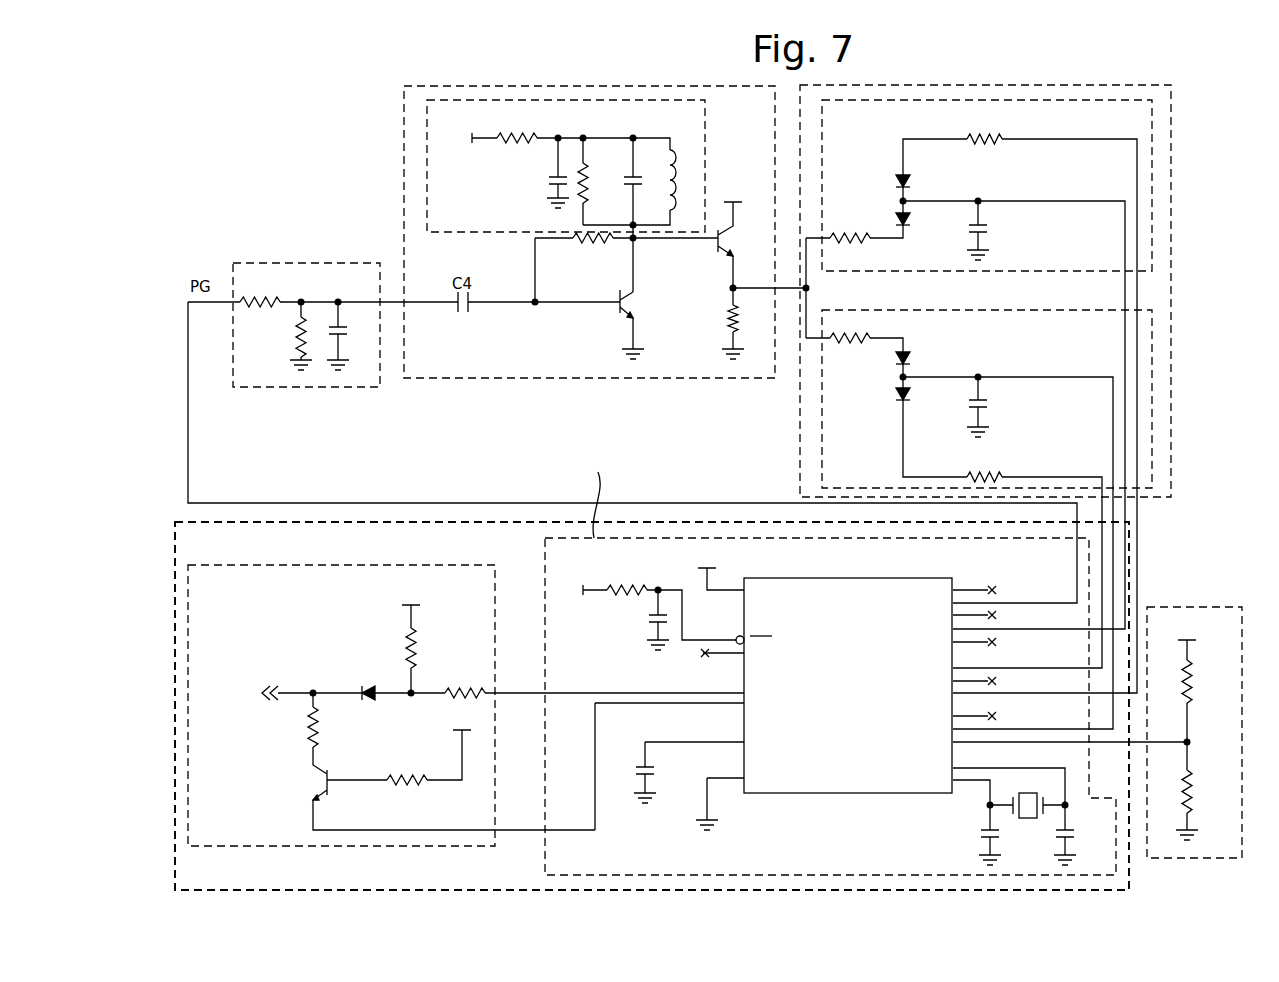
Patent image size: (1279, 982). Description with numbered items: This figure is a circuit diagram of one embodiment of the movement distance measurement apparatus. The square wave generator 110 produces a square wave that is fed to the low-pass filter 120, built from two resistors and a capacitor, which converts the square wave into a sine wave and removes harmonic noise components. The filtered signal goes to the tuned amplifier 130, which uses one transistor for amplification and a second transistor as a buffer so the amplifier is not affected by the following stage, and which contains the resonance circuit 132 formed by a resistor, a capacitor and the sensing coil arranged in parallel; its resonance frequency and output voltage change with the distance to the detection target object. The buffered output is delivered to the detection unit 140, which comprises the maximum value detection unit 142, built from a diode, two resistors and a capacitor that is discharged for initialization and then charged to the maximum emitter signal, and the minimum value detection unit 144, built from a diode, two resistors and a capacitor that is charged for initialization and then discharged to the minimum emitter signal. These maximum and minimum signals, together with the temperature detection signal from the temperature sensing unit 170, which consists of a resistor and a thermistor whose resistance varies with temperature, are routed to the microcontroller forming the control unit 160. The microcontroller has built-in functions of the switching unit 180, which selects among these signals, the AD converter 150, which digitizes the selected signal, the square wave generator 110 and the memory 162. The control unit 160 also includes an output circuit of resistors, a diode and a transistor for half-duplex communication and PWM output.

The square wave generator 110 is at (652, 706).
The low-pass filter 120 is at (297, 263).
The tuned amplifier 130 is at (405, 106).
The resonance circuit 132 is at (427, 162).
The detection unit 140 is at (1171, 131).
The maximum value detection unit 142 is at (1152, 396).
The minimum value detection unit 144 is at (1152, 188).
The AD converter 150 is at (652, 706).
The control unit 160 is at (222, 522).
The memory (EEPROM) 162 is at (452, 565).
The temperature sensing unit 170 is at (1192, 607).
The switching unit 180 is at (652, 706).